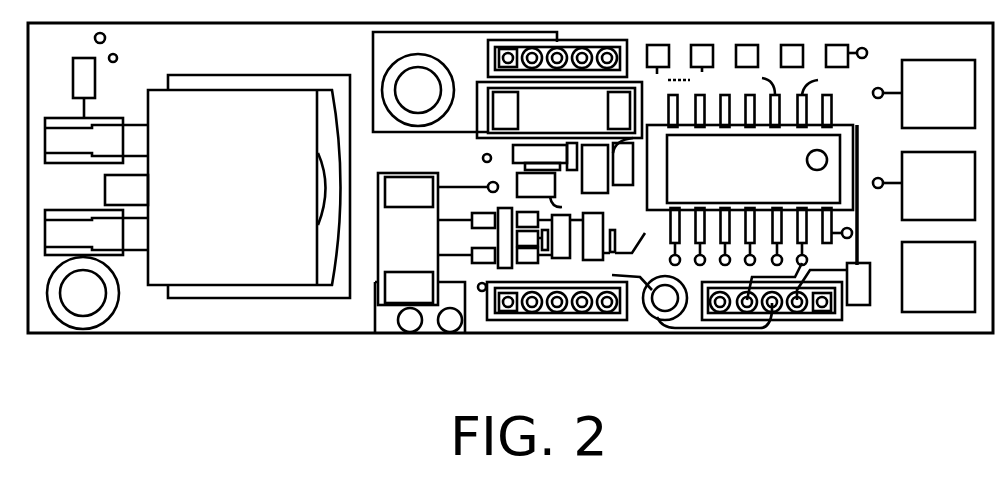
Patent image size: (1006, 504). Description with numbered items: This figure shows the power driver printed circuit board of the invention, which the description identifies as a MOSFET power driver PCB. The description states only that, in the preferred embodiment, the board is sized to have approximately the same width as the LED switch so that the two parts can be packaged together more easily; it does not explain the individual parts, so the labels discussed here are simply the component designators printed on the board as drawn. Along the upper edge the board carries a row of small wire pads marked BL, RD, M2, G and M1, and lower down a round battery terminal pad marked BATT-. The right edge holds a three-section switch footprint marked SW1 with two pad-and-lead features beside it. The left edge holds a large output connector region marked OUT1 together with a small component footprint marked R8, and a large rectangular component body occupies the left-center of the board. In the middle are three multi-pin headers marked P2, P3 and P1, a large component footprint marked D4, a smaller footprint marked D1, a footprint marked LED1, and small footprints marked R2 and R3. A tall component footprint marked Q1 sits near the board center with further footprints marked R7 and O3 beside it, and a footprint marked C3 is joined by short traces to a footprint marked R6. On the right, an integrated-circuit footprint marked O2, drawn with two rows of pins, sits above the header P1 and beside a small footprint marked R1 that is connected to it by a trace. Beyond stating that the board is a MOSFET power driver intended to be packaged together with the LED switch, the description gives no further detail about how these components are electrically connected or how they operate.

The resistor R8 is at (99, 75).
The output connector OUT1 is at (96, 223).
The diode D4 is at (546, 110).
The header connector P2 is at (559, 52).
The diode D1 is at (530, 160).
The resistor R2 is at (551, 191).
The light emitting diode LED1 is at (595, 169).
The resistor R3 is at (623, 161).
The transistor Q1 is at (426, 252).
The resistor R7 is at (425, 238).
The component O3 is at (475, 238).
The capacitor C3 is at (583, 271).
The resistor R6 is at (598, 248).
The header connector P3 is at (565, 306).
The blue wire pad BL is at (658, 68).
The red wire pad RD is at (693, 68).
The motor 2 pad M2 is at (755, 70).
The ground pad G is at (799, 70).
The motor 1 pad M1 is at (844, 68).
The integrated circuit O2 is at (766, 180).
The battery negative terminal BATT- is at (707, 268).
The header connector P1 is at (777, 300).
The resistor R1 is at (873, 295).
The switch SW1 is at (923, 186).